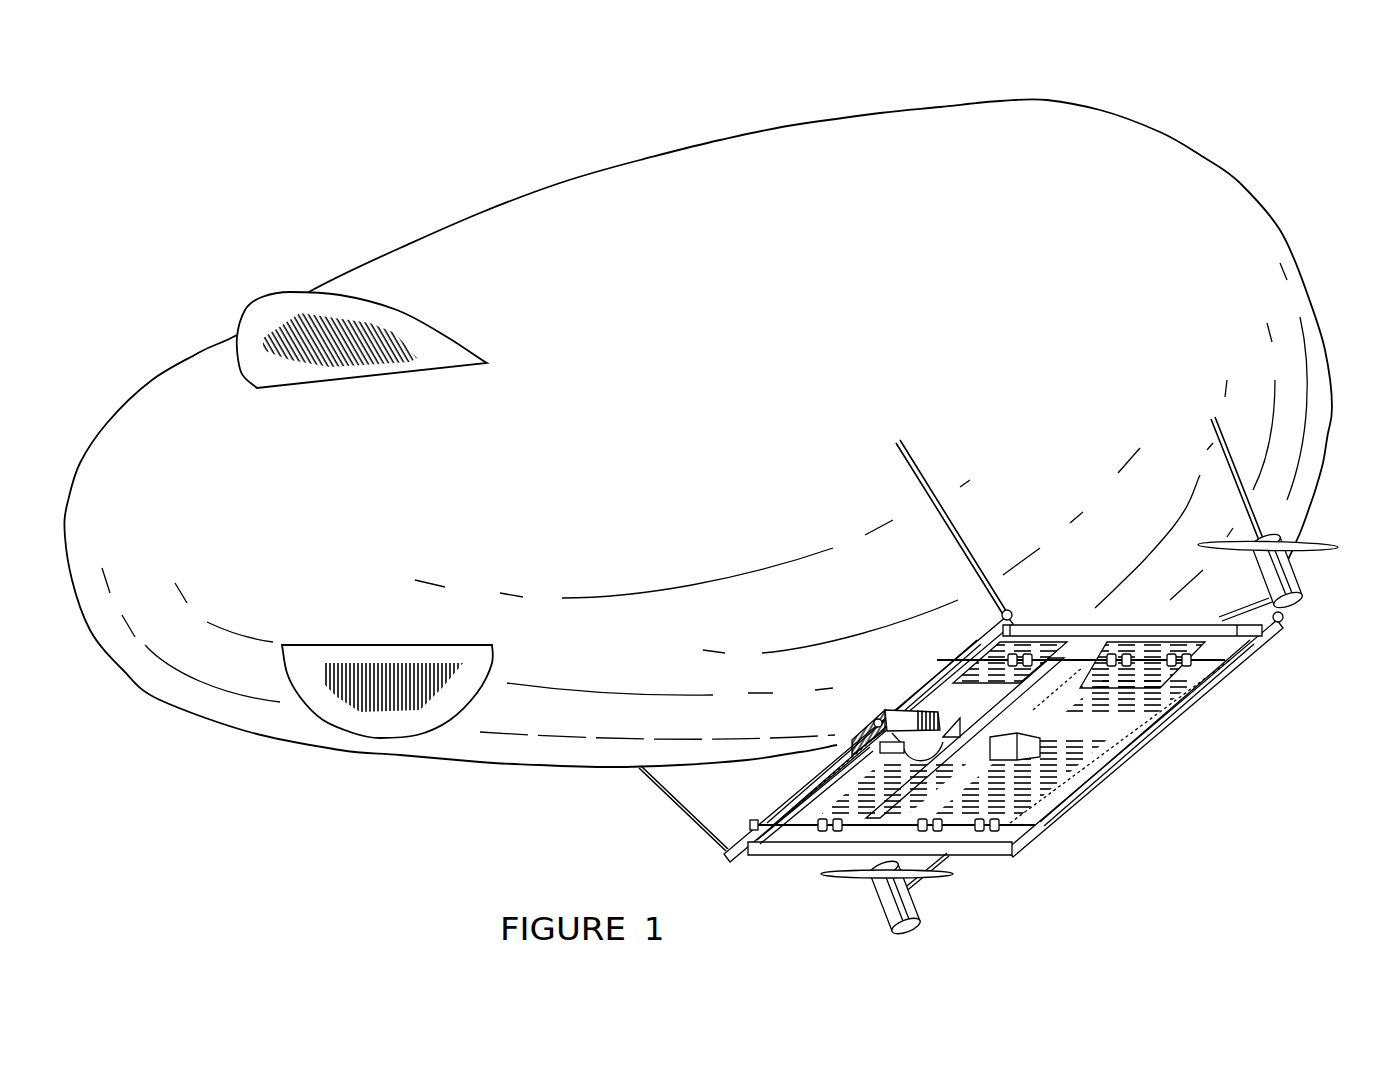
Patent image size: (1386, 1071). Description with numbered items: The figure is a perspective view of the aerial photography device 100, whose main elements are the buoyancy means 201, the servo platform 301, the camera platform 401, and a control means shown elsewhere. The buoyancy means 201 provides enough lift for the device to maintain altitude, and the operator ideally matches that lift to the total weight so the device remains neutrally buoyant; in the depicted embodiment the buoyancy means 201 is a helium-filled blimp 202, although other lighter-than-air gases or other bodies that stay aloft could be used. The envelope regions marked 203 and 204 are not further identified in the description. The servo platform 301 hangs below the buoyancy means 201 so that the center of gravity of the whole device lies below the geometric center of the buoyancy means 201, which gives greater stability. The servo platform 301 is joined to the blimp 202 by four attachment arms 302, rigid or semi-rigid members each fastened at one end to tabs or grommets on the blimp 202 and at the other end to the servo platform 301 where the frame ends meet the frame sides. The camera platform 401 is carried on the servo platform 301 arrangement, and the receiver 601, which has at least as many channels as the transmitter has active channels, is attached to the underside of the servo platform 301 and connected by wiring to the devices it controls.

The aerial photography device 100 is at (724, 494).
The buoyancy means 201 is at (435, 180).
The blimp 202 is at (640, 160).
The tail section 203 is at (1245, 188).
The lower envelope section 204 is at (88, 632).
The servo platform 301 is at (1077, 717).
The attachment arms 302 is at (677, 802).
The camera platform 401 is at (863, 788).
The receiver 601 is at (1017, 750).